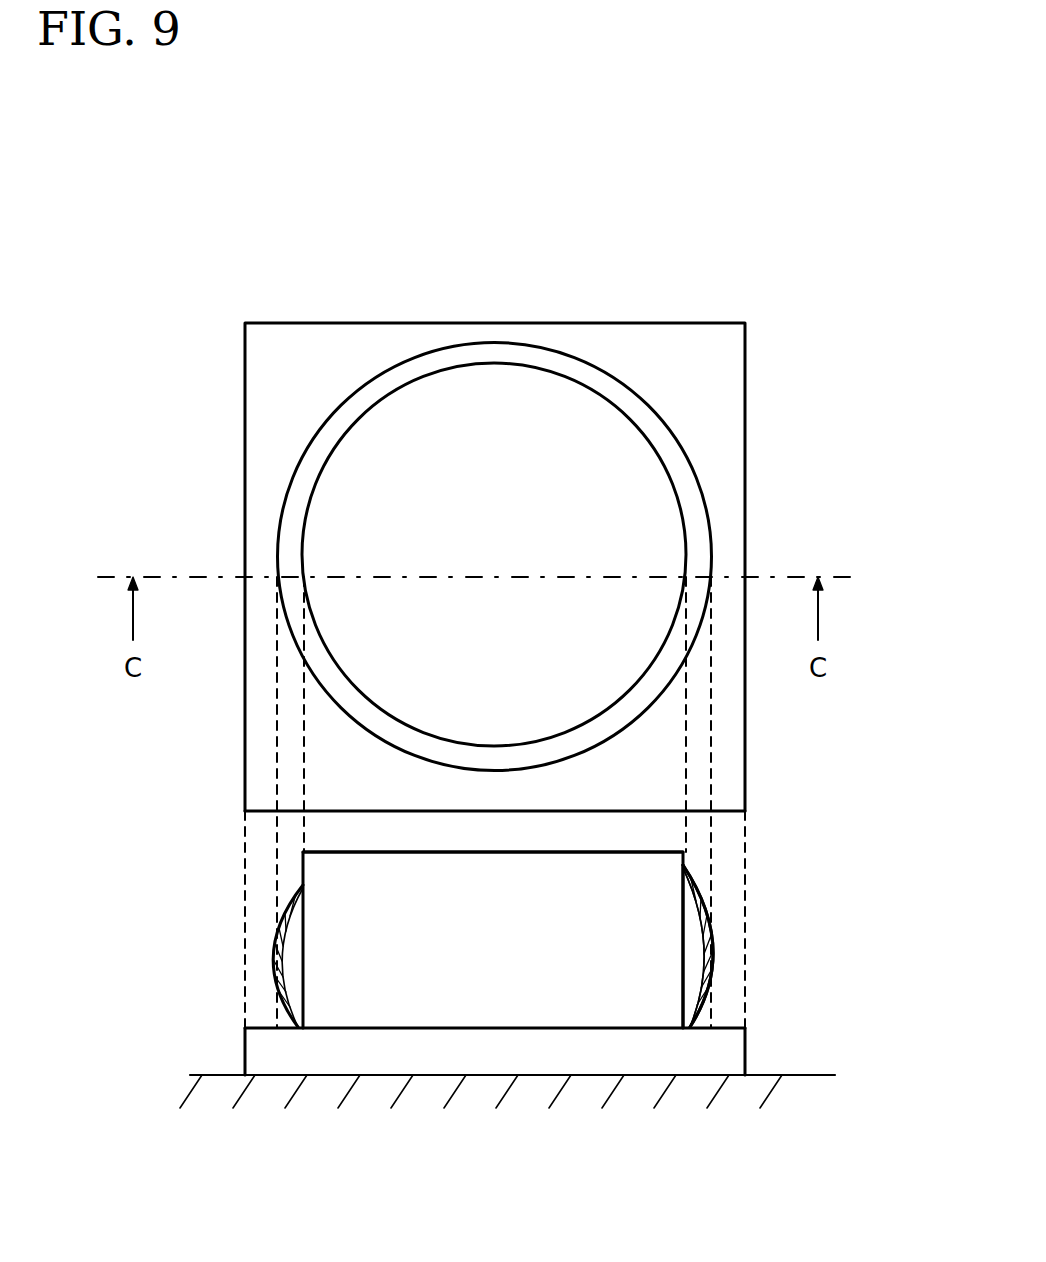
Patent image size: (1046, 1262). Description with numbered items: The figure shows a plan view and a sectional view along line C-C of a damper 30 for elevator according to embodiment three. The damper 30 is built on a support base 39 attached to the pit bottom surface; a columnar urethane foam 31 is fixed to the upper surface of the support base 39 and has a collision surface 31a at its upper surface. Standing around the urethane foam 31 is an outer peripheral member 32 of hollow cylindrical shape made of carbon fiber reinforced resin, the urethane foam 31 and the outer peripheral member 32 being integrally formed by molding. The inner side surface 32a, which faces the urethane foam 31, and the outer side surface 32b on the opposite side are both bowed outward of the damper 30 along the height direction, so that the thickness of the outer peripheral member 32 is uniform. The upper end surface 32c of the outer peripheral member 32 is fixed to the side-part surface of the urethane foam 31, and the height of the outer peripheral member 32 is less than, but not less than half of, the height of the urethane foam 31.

The damper for elevator 30 is at (380, 218).
The urethane foam 31 is at (577, 432).
The collision surface 31a is at (348, 850).
The outer peripheral member 32 is at (690, 493).
The inner side surface 32a is at (672, 939).
The outer side surface 32b is at (707, 1003).
The upper end surface 32c is at (682, 890).
The support base 39 is at (287, 360).